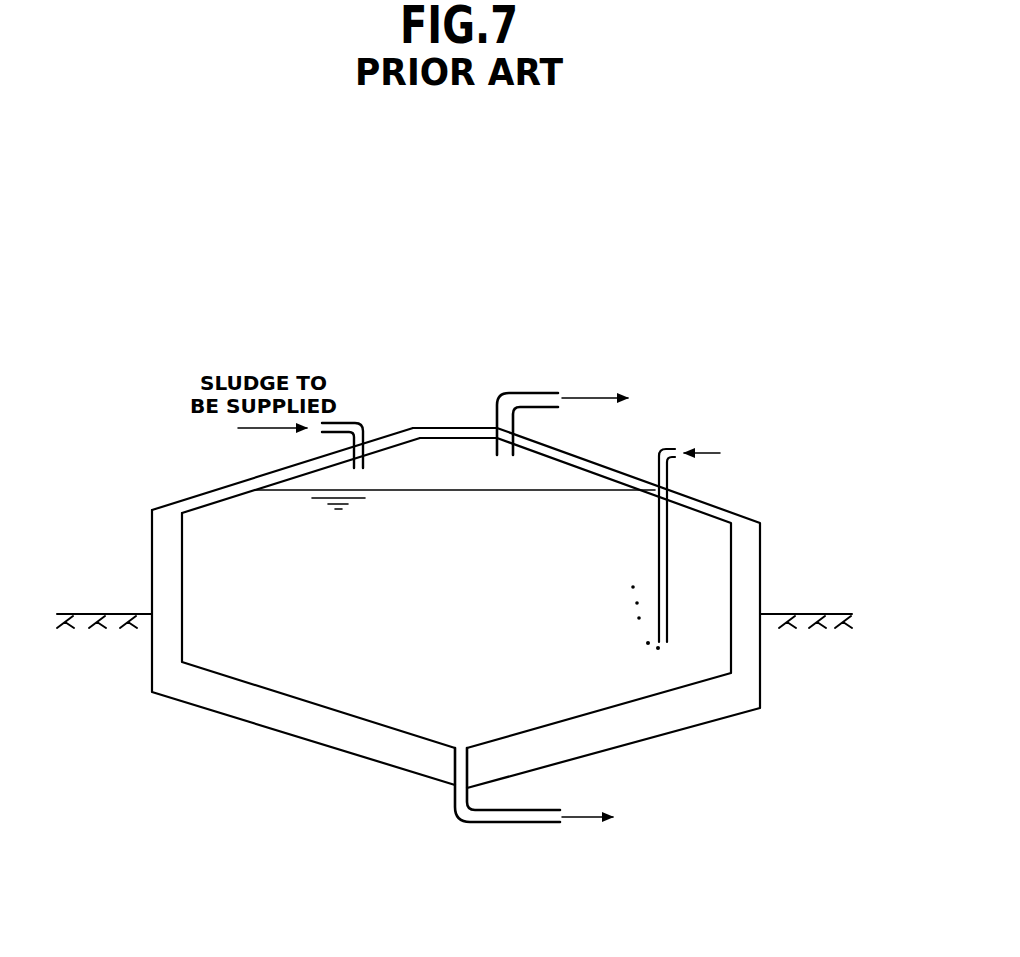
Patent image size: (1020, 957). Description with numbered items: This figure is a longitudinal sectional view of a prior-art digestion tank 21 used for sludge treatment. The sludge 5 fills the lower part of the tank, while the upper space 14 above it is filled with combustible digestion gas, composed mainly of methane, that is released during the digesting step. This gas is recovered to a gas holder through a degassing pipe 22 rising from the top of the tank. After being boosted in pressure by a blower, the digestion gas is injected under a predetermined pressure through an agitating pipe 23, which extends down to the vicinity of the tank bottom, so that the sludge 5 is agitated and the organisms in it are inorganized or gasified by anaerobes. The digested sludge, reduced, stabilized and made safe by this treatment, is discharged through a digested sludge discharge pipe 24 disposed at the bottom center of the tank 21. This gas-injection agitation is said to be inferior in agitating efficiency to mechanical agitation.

The sludge 5 is at (298, 680).
The upper space 14 is at (469, 474).
The digestion tank 21 is at (437, 420).
The degassing pipe 22 is at (524, 392).
The agitating pipe 23 is at (667, 552).
The digested sludge discharge pipe 24 is at (500, 826).